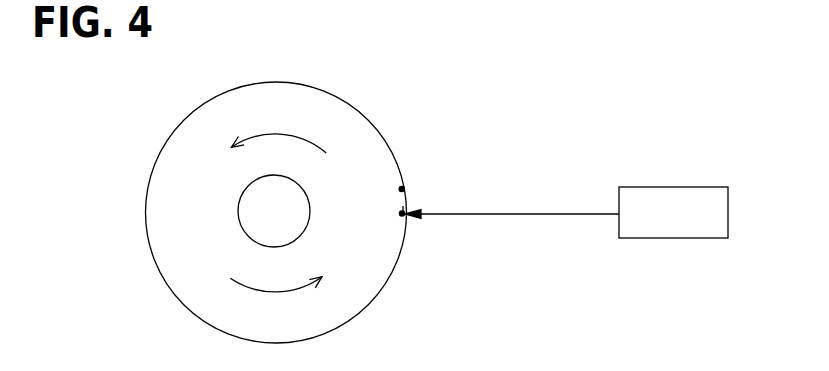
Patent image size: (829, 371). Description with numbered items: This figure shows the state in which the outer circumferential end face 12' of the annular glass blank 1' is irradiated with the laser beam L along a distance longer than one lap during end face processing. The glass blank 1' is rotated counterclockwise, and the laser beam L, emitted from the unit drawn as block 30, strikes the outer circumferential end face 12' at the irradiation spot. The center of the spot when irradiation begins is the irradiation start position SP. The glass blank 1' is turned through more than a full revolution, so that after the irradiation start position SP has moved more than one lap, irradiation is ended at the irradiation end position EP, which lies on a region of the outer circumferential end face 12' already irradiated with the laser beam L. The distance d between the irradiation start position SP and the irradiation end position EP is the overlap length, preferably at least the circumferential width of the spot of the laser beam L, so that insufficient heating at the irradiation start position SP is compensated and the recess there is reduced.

The glass blank 1' is at (270, 208).
The outer circumferential end face 12' is at (297, 208).
The irradiation start position SP is at (402, 189).
The distance d is at (403, 206).
The irradiation end position EP is at (402, 214).
The laser beam L is at (502, 214).
The exposure device (laser unit) 30 is at (678, 187).